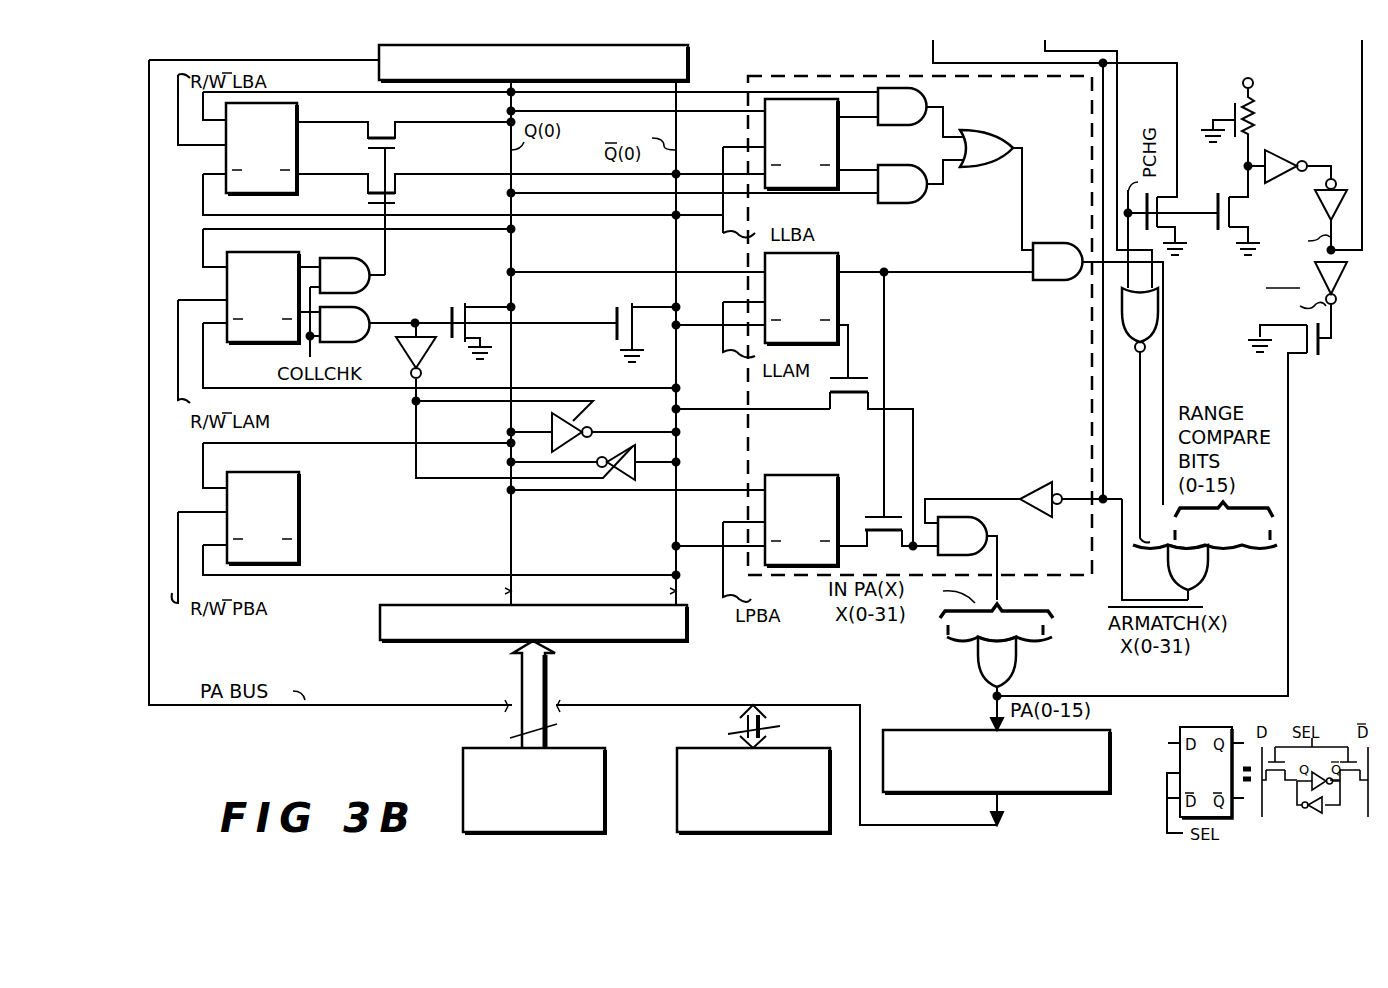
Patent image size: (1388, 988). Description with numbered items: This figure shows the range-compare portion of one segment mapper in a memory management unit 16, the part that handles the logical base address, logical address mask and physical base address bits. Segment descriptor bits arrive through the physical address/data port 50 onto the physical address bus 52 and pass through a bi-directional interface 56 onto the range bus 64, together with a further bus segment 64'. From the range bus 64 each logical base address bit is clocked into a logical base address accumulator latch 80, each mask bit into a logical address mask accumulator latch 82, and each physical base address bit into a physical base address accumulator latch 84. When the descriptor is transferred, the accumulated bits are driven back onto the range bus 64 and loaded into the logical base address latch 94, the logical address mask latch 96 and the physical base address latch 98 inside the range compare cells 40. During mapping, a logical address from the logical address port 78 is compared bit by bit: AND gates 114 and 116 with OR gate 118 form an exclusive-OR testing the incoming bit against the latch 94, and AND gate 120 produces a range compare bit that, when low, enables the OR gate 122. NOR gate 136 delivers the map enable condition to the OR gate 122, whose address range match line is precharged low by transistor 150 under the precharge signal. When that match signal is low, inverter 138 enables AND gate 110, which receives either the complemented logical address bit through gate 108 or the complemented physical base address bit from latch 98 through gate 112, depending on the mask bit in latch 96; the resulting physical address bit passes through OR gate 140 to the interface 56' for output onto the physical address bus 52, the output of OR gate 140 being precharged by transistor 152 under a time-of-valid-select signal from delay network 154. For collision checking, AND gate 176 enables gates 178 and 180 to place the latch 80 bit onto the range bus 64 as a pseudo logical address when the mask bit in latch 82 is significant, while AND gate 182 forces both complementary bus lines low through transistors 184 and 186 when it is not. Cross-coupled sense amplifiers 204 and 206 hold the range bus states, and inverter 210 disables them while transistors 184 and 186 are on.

The memory management unit 16 is at (694, 726).
The range compare cells 40 is at (782, 77).
The physical address/data port 50 is at (677, 811).
The physical address bus 52 is at (940, 822).
The bi-directional interface 56 is at (554, 64).
The interface 56' is at (1018, 761).
The range bus 64 is at (533, 423).
The internal bus 64' is at (1141, 526).
The logical address port 78 is at (605, 763).
The logical base address accumulator latch 80 is at (298, 150).
The logical address mask accumulator latch 82 is at (278, 252).
The physical base address accumulator latch 84 is at (300, 532).
The logical base address latch 94 is at (839, 150).
The logical address mask latch 96 is at (839, 282).
The physical base address latch 98 is at (838, 482).
The gate 108 is at (840, 415).
The AND gate 110 is at (982, 520).
The gate 112 is at (878, 553).
The AND gate 114 is at (925, 92).
The AND gate 116 is at (905, 203).
The OR gate 118 is at (998, 132).
The AND gate 120 is at (1052, 242).
The OR gate 122 is at (1206, 572).
The NOR gate 136 is at (1158, 325).
The inverter 138 is at (1035, 480).
The OR gate 140 is at (971, 673).
The transistor 150 is at (1172, 205).
The transistor 152 is at (1320, 358).
The delay network 154 is at (1298, 104).
The AND gate 176 is at (372, 282).
The gate 178 is at (400, 142).
The gate 180 is at (400, 197).
The AND gate 182 is at (368, 312).
The transistor 184 is at (476, 288).
The transistor 186 is at (612, 312).
The cross-coupled sense amplifier 204 is at (580, 418).
The cross-coupled sense amplifier 206 is at (627, 484).
The inverter 210 is at (432, 370).